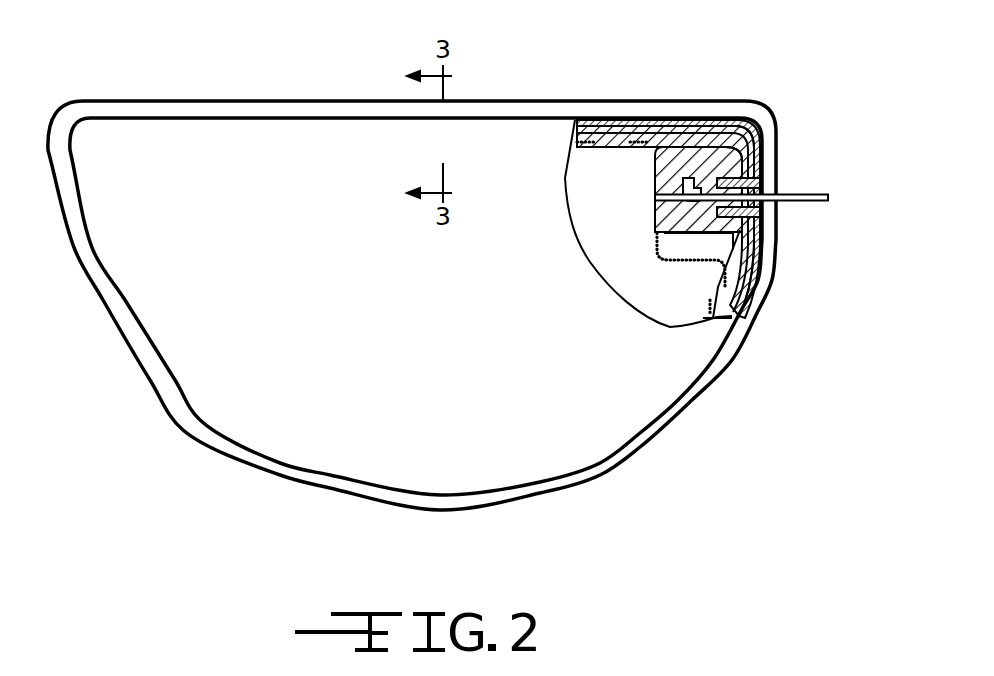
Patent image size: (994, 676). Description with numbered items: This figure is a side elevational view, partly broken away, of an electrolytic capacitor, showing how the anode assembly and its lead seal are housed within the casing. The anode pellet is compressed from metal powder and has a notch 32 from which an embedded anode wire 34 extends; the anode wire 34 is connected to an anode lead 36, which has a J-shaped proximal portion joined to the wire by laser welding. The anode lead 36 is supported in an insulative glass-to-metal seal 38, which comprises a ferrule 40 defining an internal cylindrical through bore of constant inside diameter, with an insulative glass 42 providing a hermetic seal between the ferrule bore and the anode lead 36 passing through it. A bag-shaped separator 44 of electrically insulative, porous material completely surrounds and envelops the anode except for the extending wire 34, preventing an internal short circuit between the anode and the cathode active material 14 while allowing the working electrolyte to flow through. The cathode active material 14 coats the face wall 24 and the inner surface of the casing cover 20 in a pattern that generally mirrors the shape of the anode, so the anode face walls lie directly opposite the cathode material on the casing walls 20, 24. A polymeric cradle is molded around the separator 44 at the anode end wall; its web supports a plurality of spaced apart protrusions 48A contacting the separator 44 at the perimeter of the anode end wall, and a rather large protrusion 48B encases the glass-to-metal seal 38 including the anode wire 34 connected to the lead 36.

The cathode active material 14 is at (678, 262).
The casing cover 20 is at (738, 253).
The face wall 24 is at (605, 428).
The notch 32 is at (705, 242).
The anode wire 34 is at (655, 188).
The anode lead 36 is at (818, 194).
The glass-to-metal seal 38 is at (763, 185).
The ferrule 40 is at (750, 146).
The insulative glass 42 is at (782, 205).
The separator 44 is at (587, 180).
The spaced apart protrusions 48A is at (607, 143).
The large protrusion 48B is at (692, 165).